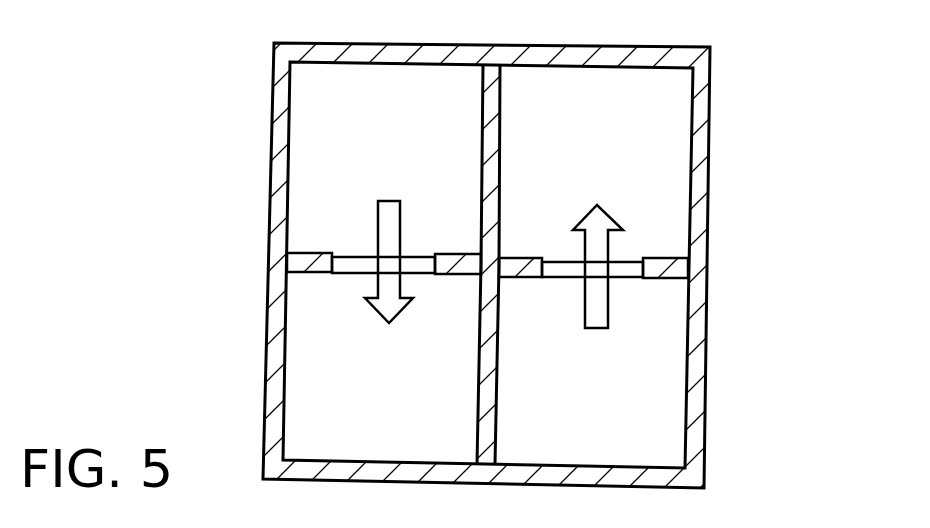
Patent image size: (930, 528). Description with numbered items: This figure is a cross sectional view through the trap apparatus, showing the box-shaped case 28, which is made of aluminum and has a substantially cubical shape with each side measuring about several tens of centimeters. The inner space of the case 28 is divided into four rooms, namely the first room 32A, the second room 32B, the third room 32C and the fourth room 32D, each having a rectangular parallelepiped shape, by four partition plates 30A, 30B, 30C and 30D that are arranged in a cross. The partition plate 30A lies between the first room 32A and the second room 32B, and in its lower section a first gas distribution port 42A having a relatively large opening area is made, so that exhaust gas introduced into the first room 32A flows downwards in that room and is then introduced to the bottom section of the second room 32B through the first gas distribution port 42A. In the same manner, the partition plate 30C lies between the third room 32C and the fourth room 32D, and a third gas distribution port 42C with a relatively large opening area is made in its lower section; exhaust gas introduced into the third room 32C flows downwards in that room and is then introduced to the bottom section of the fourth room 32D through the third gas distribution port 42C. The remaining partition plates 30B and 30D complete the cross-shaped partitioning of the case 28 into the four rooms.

The case 28 is at (707, 392).
The partition plate 30A is at (630, 266).
The partition plate 30B is at (502, 160).
The partition plate 30C is at (384, 265).
The partition plate 30D is at (500, 408).
The first room 32A is at (617, 407).
The second room 32B is at (623, 167).
The third room 32C is at (415, 163).
The fourth room 32D is at (388, 387).
The first gas distribution port 42A is at (622, 282).
The third gas distribution port 42C is at (350, 275).